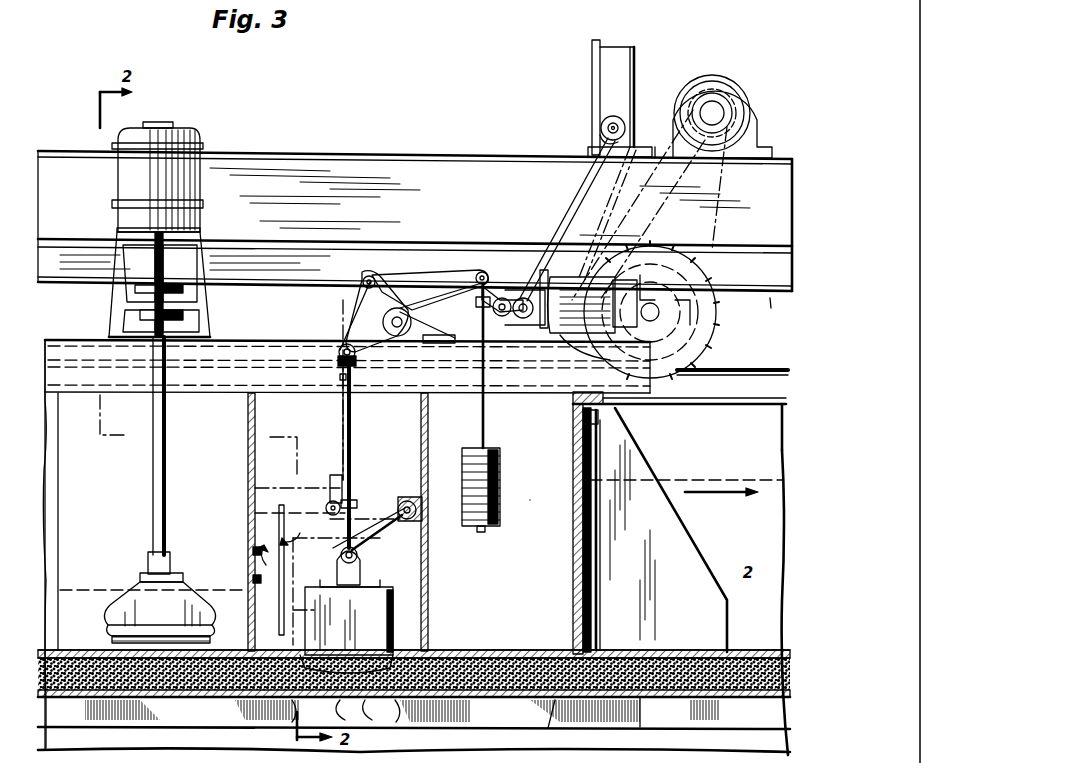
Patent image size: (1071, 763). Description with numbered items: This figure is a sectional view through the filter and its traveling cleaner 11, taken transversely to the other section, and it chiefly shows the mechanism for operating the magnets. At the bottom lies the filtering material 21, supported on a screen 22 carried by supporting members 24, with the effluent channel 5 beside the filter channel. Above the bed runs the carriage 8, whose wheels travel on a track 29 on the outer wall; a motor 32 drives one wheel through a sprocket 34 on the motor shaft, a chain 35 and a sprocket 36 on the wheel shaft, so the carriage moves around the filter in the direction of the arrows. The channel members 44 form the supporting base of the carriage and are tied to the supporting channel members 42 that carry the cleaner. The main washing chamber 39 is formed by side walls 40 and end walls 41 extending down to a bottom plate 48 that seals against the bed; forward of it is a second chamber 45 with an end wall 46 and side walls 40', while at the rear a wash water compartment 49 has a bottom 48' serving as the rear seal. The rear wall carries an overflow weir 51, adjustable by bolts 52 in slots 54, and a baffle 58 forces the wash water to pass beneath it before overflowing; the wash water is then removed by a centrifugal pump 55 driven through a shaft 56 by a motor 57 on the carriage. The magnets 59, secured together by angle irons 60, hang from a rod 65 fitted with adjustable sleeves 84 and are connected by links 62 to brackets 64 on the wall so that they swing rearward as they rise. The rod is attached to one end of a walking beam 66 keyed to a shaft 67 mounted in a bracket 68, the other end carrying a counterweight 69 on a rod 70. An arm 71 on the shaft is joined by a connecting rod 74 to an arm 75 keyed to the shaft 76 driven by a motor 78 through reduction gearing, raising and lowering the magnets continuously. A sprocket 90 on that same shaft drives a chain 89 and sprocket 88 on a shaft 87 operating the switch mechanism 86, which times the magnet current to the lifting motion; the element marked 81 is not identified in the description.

The effluent channel 5 is at (62, 444).
The carriage 8 is at (770, 298).
The traveling cleaner 11 is at (62, 335).
The filtering material 21 is at (552, 700).
The screen 22 is at (726, 697).
The supporting members 24 is at (648, 725).
The track 29 is at (742, 370).
The motor 32 is at (754, 132).
The sprocket 34 is at (748, 100).
The chain 35 is at (726, 192).
The sprocket 36 is at (705, 318).
The chamber 39 is at (327, 472).
The side walls 40 is at (205, 435).
The side walls 40' is at (399, 535).
The end walls 41 is at (247, 437).
The supporting channel members 42 is at (290, 343).
The channel members 44 is at (370, 170).
The second chamber 45 is at (535, 490).
The end wall 46 is at (598, 504).
The bottom plate 48 is at (414, 684).
The bottom of the chamber 48' is at (414, 634).
The wash water compartment 49 is at (159, 573).
The overflow weir 51 is at (255, 515).
The bolts 52 is at (252, 580).
The slots 54 is at (252, 545).
The centrifugal pump 55 is at (147, 564).
The shaft 56 is at (152, 404).
The motor 57 is at (117, 181).
The baffle 58 is at (285, 515).
The magnets 59 is at (346, 630).
The angle irons 60 is at (362, 575).
The links 62 is at (392, 508).
The brackets 64 is at (412, 495).
The rod 65 is at (356, 414).
The walking beam 66 is at (365, 352).
The shaft 67 is at (410, 300).
The bracket 68 is at (440, 344).
The counterweight 69 is at (462, 462).
The rod 70 is at (485, 414).
The arm 71 is at (392, 290).
The connecting rod 74 is at (440, 285).
The arm 75 is at (530, 296).
The shaft 76 is at (548, 335).
The motor 78 is at (580, 258).
The pin 81 is at (345, 378).
The adjustable sleeves 84 is at (337, 532).
The switch mechanism 86 is at (592, 78).
The shaft 87 is at (601, 124).
The sprocket 88 is at (600, 138).
The chain 89 is at (566, 190).
The sprocket 90 is at (502, 312).